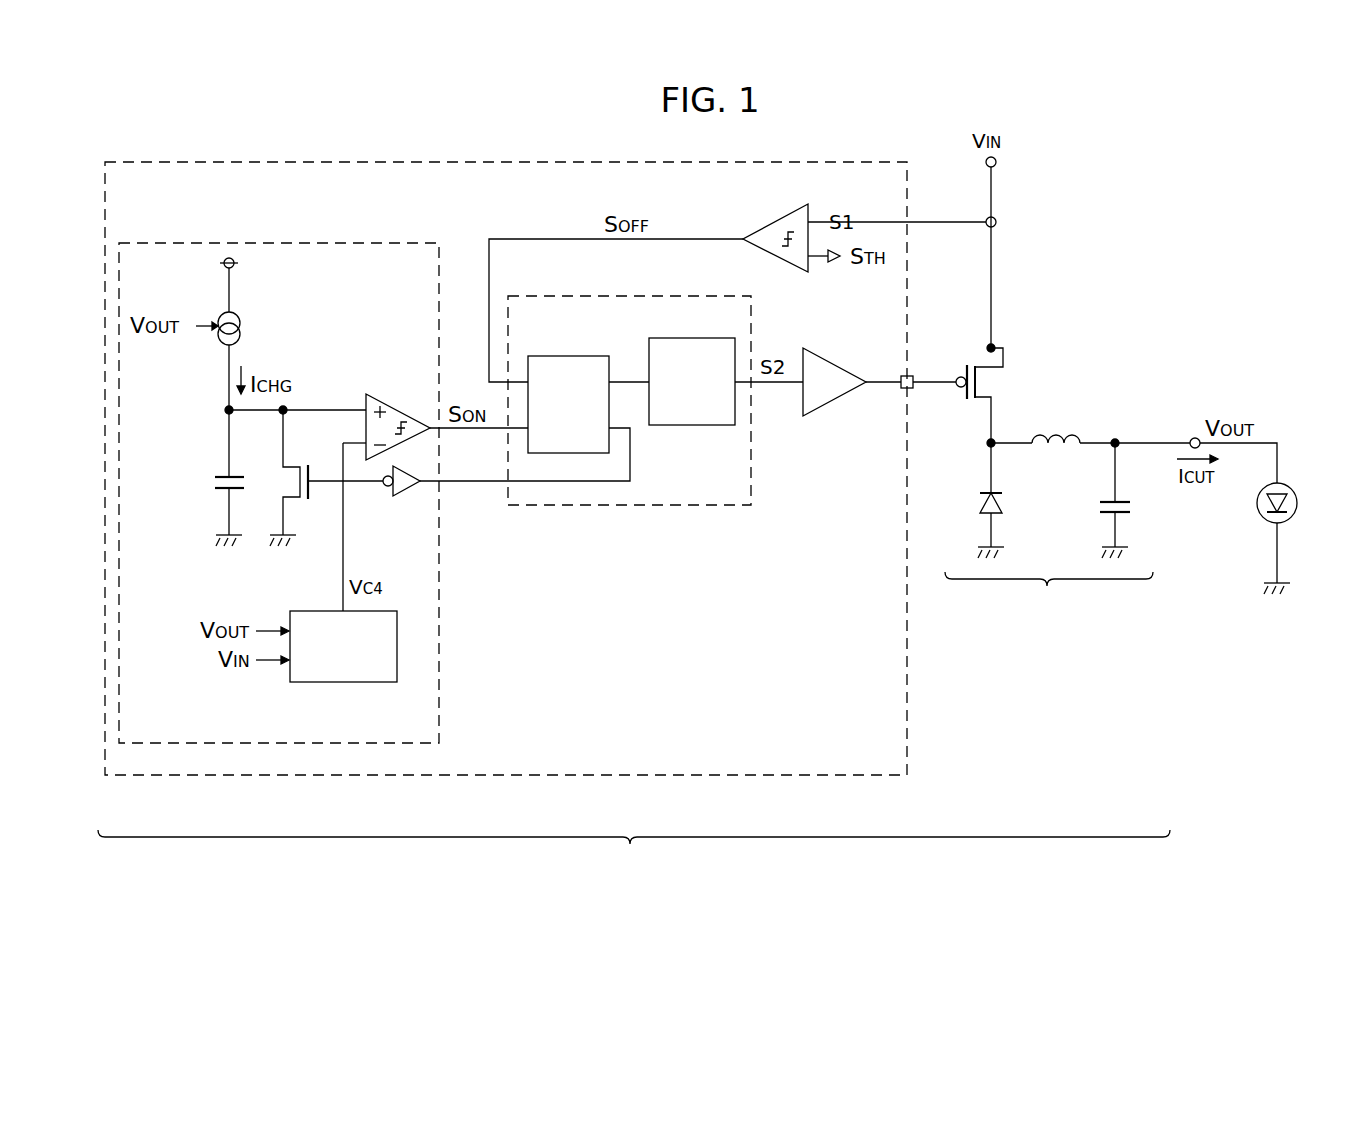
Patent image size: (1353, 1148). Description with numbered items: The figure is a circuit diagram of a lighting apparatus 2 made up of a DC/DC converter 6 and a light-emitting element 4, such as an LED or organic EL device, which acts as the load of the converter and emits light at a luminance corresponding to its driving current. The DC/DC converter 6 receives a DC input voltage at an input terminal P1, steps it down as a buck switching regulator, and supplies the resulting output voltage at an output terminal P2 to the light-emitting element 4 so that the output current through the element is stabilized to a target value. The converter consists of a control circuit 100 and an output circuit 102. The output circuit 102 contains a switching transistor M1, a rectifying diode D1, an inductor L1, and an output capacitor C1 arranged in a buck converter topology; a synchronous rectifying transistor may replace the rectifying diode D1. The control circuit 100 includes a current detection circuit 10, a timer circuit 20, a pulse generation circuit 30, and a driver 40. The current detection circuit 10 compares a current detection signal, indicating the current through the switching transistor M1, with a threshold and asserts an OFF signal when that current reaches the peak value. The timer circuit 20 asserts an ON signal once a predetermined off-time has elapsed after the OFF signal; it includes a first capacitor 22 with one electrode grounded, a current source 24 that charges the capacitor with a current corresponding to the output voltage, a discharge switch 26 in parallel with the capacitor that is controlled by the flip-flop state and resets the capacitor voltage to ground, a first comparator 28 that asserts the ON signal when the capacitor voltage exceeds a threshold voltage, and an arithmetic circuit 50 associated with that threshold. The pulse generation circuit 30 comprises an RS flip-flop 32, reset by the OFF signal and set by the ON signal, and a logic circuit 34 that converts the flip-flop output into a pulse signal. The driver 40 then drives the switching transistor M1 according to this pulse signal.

The lighting apparatus 2 is at (718, 937).
The light-emitting element 4 is at (1298, 492).
The DC/DC converter 6 is at (634, 853).
The current detection circuit 10 is at (765, 222).
The timer circuit 20 is at (350, 243).
The first capacitor 22 is at (214, 488).
The current source 24 is at (246, 327).
The discharge switch 26 is at (306, 500).
The first comparator 28 is at (378, 396).
The pulse generation circuit 30 is at (663, 505).
The RS flip-flop 32 is at (558, 356).
The logic circuit 34 is at (702, 425).
The driver 40 is at (830, 405).
The arithmetic circuit 50 is at (368, 683).
The control circuit 100 is at (733, 776).
The output circuit 102 is at (1049, 596).
The switching transistor M1 is at (1010, 377).
The inductor L1 is at (1066, 427).
The rectifying diode D1 is at (1006, 503).
The output capacitor C1 is at (1135, 507).
The input terminal P1 is at (997, 162).
The output terminal P2 is at (1193, 438).